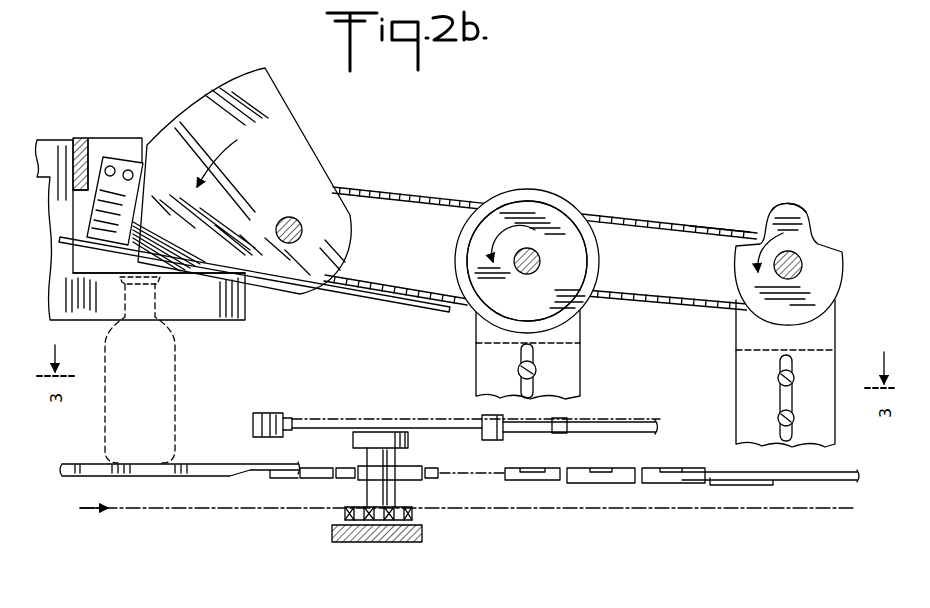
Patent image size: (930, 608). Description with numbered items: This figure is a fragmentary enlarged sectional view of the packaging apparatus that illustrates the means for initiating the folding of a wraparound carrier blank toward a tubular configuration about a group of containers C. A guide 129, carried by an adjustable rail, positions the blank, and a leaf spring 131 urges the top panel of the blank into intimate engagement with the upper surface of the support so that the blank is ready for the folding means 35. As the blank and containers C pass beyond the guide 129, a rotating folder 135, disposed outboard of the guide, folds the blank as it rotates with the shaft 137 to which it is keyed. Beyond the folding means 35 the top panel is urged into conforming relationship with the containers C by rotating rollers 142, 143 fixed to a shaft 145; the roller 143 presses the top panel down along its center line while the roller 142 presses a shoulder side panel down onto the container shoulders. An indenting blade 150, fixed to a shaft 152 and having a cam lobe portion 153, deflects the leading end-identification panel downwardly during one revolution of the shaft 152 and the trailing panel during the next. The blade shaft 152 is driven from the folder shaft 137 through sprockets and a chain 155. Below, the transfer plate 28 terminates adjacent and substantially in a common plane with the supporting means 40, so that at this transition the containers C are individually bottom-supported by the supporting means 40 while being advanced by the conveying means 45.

The transfer plate 28 is at (203, 473).
The folding means 35 is at (396, 183).
The supporting means 40 is at (563, 490).
The conveying means 45 is at (642, 416).
The guide 129 is at (245, 303).
The leaf spring 131 is at (360, 294).
The rotating folder 135 is at (272, 178).
The shaft 137 is at (307, 204).
The rotating roller 142 is at (553, 190).
The rotating roller 143 is at (575, 268).
The shaft 145 is at (527, 273).
The indenting blade 150 is at (825, 270).
The shaft 152 is at (800, 258).
The cam lobe portion 153 is at (815, 185).
The chain 155 is at (700, 196).
The container C is at (168, 386).